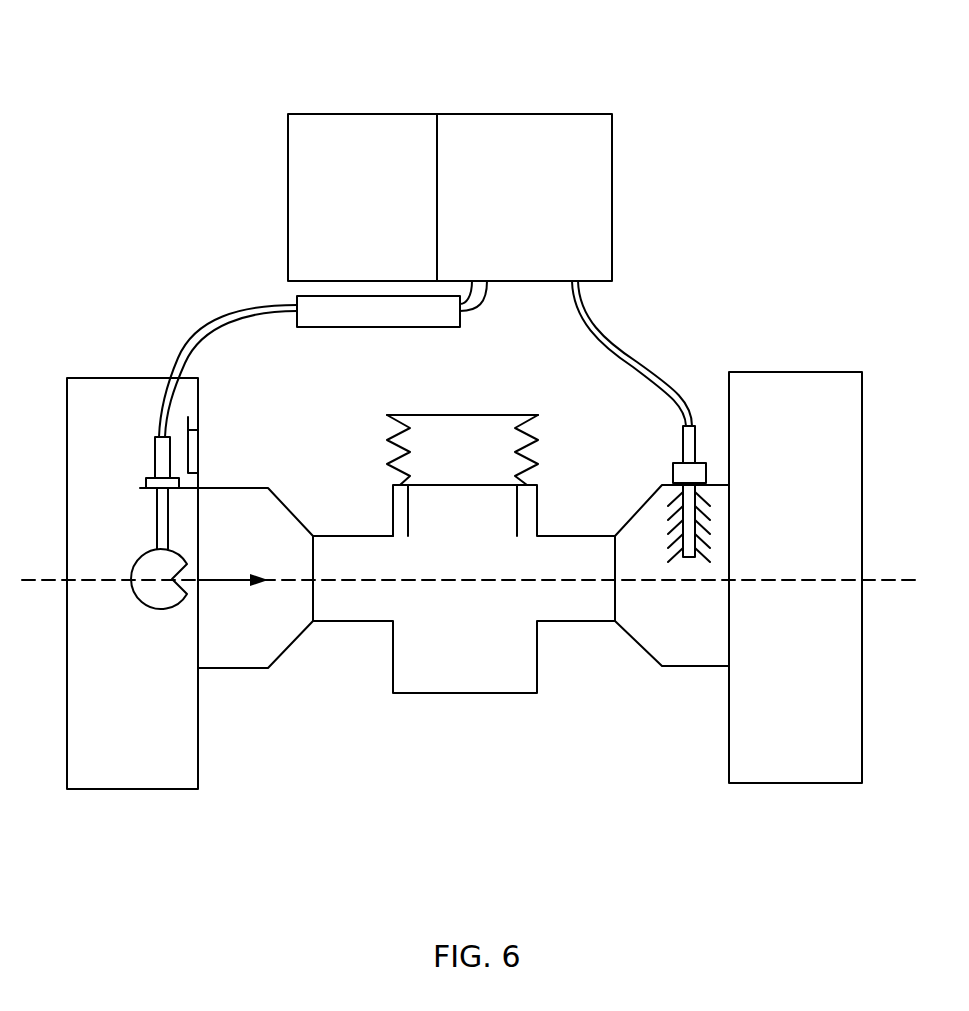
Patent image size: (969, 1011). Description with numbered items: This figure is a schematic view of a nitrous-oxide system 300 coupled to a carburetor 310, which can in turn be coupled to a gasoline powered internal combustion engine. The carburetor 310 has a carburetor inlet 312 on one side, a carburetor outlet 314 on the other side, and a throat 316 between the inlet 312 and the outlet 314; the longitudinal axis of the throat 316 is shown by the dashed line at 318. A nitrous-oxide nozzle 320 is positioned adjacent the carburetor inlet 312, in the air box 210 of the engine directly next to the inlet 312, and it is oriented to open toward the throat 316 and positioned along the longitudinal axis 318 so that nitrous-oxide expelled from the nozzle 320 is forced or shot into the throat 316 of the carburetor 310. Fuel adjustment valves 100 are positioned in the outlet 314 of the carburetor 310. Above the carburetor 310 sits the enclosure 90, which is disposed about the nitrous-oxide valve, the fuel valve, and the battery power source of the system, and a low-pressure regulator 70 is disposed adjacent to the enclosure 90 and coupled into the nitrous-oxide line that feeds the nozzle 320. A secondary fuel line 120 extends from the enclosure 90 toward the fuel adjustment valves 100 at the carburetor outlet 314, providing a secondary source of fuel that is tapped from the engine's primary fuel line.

The nitrous-oxide system 300 is at (126, 134).
The enclosure 90 is at (527, 115).
The low-pressure regulator 70 is at (377, 327).
The secondary fuel line 120 is at (622, 352).
The fuel adjustment valves 100 is at (673, 463).
The carburetor 310 is at (460, 693).
The throat 316 is at (370, 536).
The longitudinal axis 318 is at (443, 573).
The carburetor inlet 312 is at (232, 668).
The carburetor outlet 314 is at (690, 667).
The air box 210 is at (177, 789).
The nitrous-oxide nozzle 320 is at (143, 603).